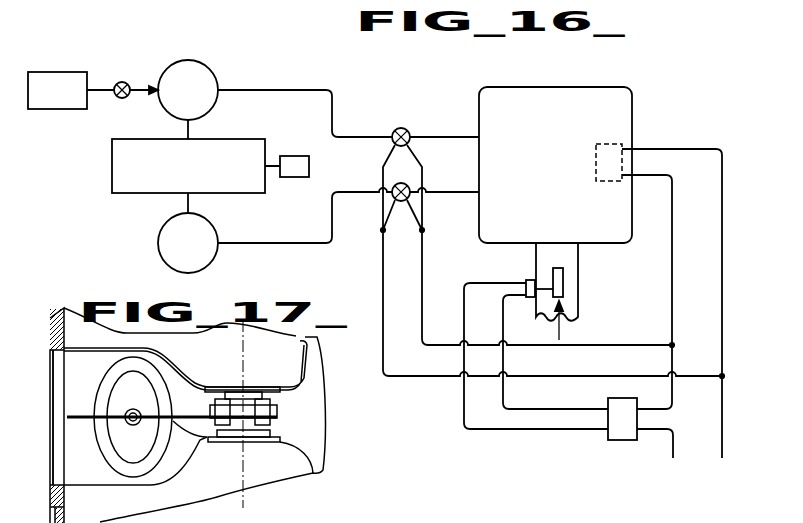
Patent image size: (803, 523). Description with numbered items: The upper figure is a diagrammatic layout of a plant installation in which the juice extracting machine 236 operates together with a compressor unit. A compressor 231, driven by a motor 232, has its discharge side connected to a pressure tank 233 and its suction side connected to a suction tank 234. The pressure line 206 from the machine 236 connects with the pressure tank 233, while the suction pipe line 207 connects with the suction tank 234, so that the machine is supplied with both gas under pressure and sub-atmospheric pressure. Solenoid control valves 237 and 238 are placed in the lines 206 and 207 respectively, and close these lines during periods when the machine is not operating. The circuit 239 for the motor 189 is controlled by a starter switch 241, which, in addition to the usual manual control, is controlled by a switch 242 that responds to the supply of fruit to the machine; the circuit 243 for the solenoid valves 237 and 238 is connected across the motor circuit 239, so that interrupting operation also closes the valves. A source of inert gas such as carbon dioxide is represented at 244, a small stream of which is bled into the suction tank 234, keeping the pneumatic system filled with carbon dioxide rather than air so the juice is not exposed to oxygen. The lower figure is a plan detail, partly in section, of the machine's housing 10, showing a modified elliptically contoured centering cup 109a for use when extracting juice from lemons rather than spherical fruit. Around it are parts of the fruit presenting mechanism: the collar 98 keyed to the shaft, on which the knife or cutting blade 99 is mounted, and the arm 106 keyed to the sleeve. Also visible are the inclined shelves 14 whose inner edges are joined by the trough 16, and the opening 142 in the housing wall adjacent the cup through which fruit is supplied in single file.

In FIG. 16, the source of inert gas 244 is at (53, 78).
In FIG. 16, the suction tank 234 is at (209, 68).
In FIG. 16, the compressor 231 is at (240, 140).
In FIG. 16, the motor 232 is at (295, 155).
In FIG. 16, the pressure tank 233 is at (217, 227).
In FIG. 16, the suction pipe line 207 is at (333, 90).
In FIG. 16, the pressure line 206 is at (313, 233).
In FIG. 16, the solenoid control valve 238 is at (400, 128).
In FIG. 16, the solenoid control valve 237 is at (408, 186).
In FIG. 16, the machine 236 is at (530, 80).
In FIG. 16, the motor 189 is at (603, 135).
In FIG. 16, the circuit for the solenoid valves 243 is at (407, 273).
In FIG. 16, the switch 242 is at (528, 280).
In FIG. 16, the circuit for the motor 239 is at (708, 292).
In FIG. 16, the starter switch 241 is at (608, 403).
In FIG. 17, the housing 10 is at (57, 312).
In FIG. 17, the inclined shelves 14 is at (304, 338).
In FIG. 17, the trough 16 is at (285, 400).
In FIG. 17, the arm 106 is at (198, 449).
In FIG. 17, the elliptically contoured cup 109a is at (103, 390).
In FIG. 17, the knife or cutting blade 99 is at (82, 422).
In FIG. 17, the opening 142 is at (55, 470).
In FIG. 17, the collar 98 is at (280, 410).